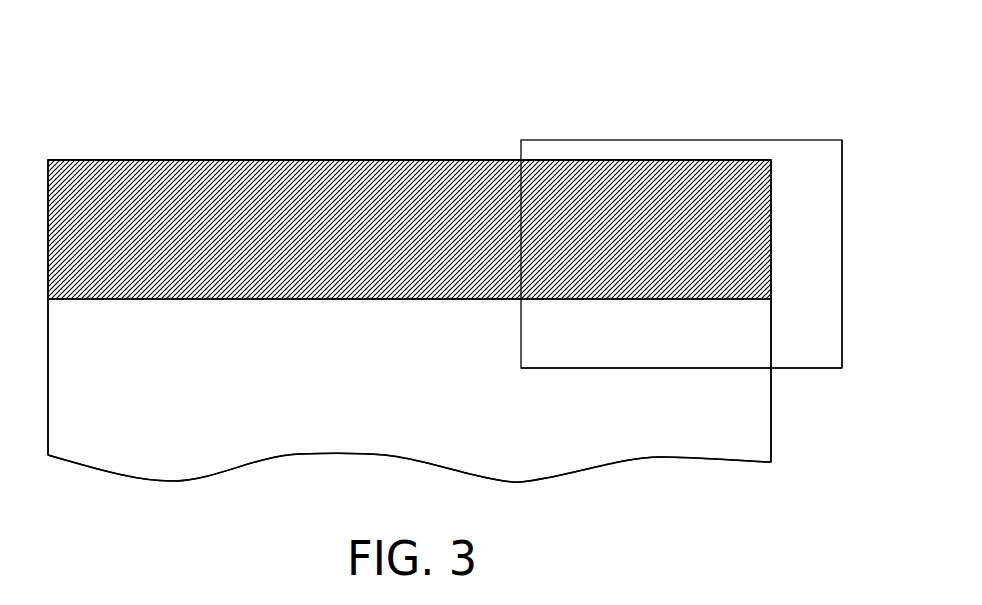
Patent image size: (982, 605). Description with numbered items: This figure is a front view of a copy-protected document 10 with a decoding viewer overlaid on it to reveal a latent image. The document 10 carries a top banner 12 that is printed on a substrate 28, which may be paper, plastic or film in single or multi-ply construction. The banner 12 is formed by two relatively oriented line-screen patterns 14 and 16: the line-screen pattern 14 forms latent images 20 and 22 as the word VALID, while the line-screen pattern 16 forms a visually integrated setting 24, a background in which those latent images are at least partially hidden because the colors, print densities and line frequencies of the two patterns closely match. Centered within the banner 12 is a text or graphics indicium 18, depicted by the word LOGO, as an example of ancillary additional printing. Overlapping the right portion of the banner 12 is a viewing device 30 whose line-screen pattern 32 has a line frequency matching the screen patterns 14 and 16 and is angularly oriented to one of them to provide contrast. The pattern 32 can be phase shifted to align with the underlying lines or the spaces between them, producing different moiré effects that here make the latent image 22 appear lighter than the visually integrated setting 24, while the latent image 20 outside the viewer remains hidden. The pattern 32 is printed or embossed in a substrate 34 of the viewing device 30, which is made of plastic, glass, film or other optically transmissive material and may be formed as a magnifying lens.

The copy-protected document 10 is at (91, 150).
The top banner 12 is at (270, 299).
The line-screen pattern 14 is at (188, 160).
The line-screen pattern 16 is at (420, 299).
The text or graphics indicium 18 is at (386, 183).
The latent image 20 is at (188, 304).
The latent image 22 is at (623, 180).
The visually integrated setting 24 is at (287, 166).
The substrate 28 is at (498, 433).
The viewing device 30 is at (734, 130).
The line-screen pattern 32 is at (805, 330).
The substrate 34 is at (842, 257).